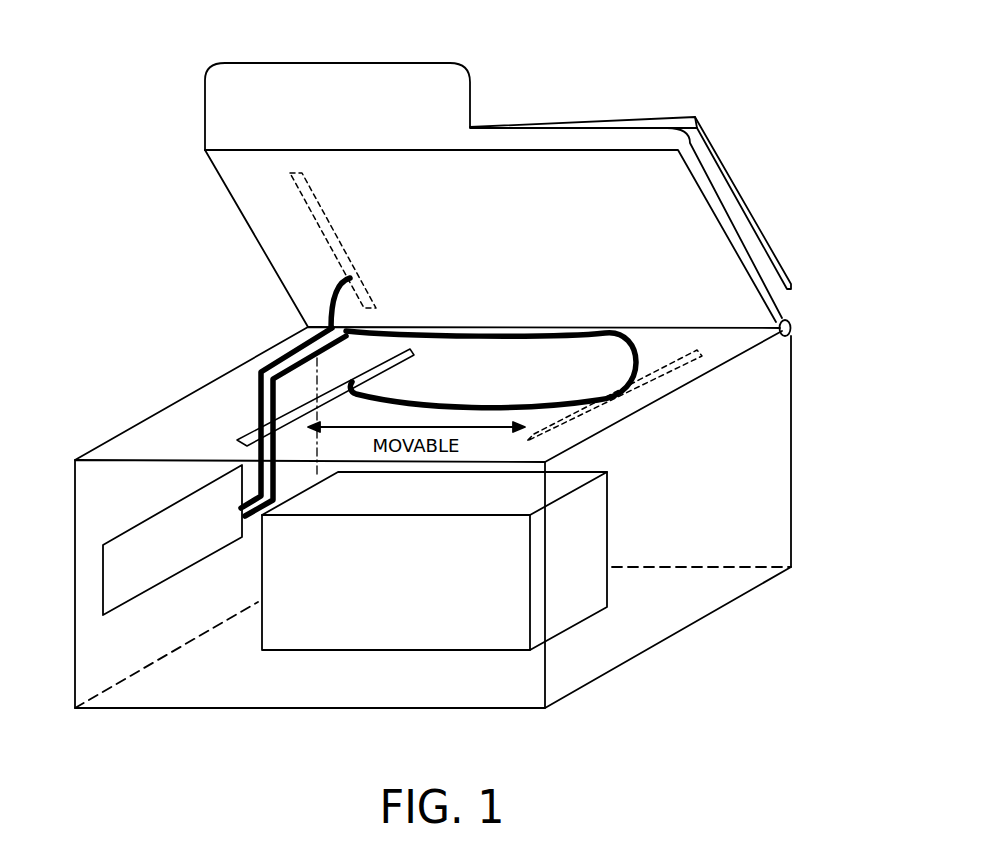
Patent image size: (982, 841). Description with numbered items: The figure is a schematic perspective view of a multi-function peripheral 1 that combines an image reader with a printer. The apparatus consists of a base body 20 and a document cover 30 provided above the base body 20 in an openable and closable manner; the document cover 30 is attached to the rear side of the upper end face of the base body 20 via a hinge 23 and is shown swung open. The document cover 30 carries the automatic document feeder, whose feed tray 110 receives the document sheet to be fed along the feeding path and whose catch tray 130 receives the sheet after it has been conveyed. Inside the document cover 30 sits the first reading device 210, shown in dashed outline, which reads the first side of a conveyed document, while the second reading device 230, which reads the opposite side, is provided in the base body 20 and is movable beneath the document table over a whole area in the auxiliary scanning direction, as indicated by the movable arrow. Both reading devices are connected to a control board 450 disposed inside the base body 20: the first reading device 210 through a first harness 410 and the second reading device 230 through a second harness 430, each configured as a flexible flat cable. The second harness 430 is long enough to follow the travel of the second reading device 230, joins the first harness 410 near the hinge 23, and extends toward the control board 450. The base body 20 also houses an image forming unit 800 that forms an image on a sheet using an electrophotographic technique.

The multi-function peripheral 1 is at (768, 80).
The base body 20 is at (763, 460).
The hinge 23 is at (797, 325).
The document cover 30 is at (412, 68).
The feed tray 110 is at (633, 118).
The catch tray 130 is at (772, 280).
The first reading device 210 is at (336, 228).
The second reading device 230 is at (238, 437).
The first harness 410 is at (325, 305).
The second harness 430 is at (464, 330).
The control board 450 is at (163, 510).
The image forming unit 800 is at (612, 526).